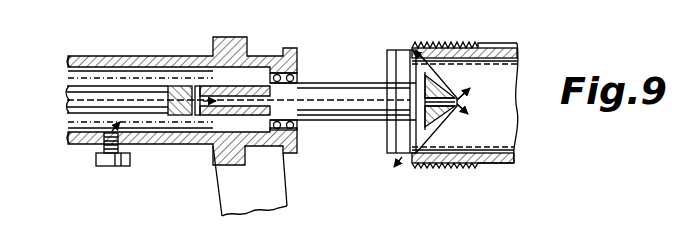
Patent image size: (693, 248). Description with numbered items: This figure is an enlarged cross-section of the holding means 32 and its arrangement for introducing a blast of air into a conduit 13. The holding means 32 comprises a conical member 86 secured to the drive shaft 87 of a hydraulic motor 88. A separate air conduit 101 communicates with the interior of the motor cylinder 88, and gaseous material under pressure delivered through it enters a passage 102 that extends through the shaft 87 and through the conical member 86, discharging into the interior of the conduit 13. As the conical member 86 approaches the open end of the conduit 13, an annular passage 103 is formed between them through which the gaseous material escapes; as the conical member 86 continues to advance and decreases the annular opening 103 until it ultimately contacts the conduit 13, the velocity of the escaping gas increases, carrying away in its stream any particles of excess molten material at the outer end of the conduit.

The conduit 13 is at (505, 47).
The holding means 32 is at (386, 49).
The conical member 86 is at (428, 130).
The drive shaft 87 is at (345, 88).
The hydraulic motor 88 is at (143, 37).
The conduit 101 is at (110, 167).
The passage 102 is at (203, 112).
The annular passage 103 is at (406, 50).